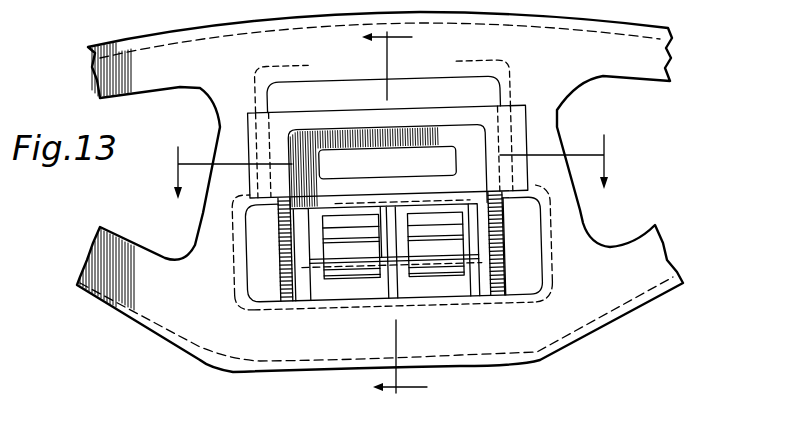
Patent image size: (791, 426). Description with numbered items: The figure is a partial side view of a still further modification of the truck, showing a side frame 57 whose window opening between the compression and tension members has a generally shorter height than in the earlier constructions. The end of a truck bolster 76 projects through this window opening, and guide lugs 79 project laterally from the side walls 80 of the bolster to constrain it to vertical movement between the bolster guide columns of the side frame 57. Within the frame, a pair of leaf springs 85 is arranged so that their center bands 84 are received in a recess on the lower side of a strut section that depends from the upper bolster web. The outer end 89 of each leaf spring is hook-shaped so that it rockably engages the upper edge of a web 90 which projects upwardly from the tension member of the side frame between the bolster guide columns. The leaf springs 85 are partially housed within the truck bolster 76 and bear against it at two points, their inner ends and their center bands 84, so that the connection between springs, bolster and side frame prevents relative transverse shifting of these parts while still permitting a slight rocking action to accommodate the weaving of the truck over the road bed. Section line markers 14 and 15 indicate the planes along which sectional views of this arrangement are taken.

The side frame 57 is at (492, 13).
The section line 14- 14 is at (349, 46).
The section line 15- 15 is at (390, 167).
The truck bolster 76 is at (316, 111).
The guide lugs 79 is at (520, 123).
The side walls 80 is at (493, 172).
The center bands 84 is at (322, 215).
The leaf springs 85 is at (422, 222).
The outer end 89 is at (427, 252).
The web 90 is at (413, 287).